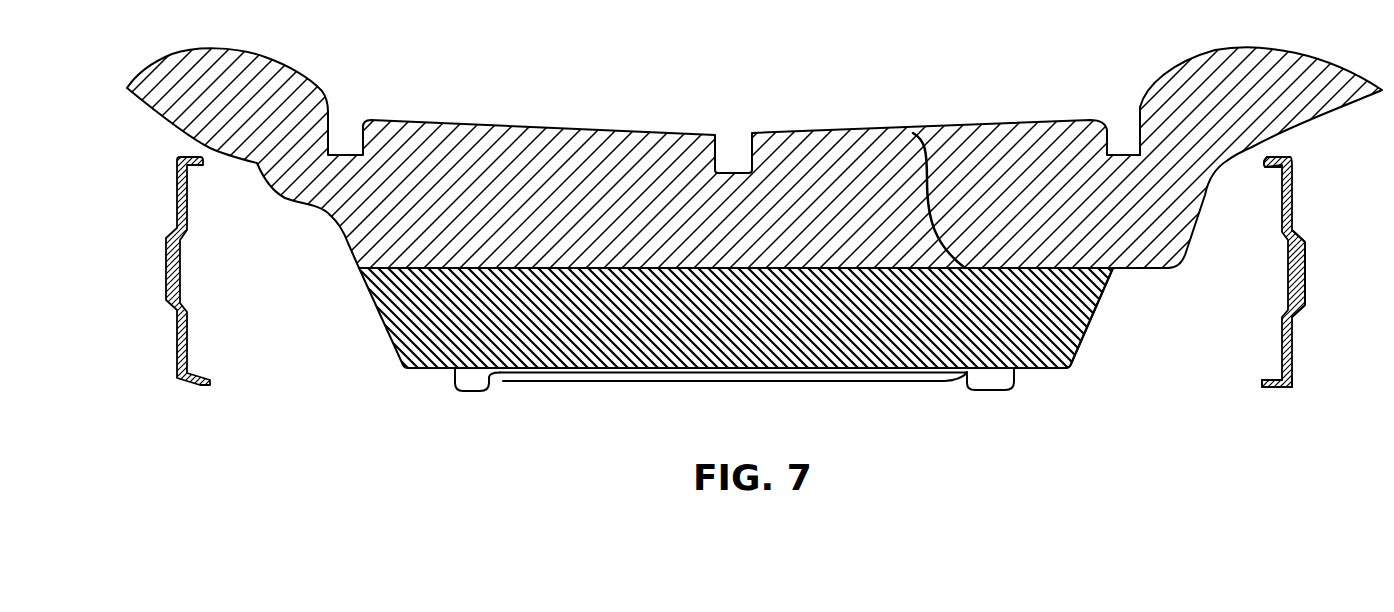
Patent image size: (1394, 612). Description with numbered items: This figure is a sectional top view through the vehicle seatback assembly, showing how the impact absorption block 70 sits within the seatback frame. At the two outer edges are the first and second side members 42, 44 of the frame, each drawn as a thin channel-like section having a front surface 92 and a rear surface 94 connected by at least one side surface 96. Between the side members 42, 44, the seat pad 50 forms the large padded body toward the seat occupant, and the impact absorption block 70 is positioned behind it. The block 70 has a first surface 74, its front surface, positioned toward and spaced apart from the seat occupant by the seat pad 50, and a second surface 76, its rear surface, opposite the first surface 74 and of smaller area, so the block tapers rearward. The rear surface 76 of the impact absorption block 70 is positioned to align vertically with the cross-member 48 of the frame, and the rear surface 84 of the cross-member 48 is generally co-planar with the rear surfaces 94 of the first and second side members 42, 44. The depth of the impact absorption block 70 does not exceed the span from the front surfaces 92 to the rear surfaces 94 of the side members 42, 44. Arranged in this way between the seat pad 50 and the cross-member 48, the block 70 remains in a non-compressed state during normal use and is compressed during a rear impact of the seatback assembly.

The side member 42 is at (1288, 257).
The side member 44 is at (178, 270).
The cross-member 48 is at (580, 382).
The seat pad 50 is at (1170, 78).
The impact absorption block 70 is at (383, 322).
The first surface 74 is at (913, 133).
The second surface 76 is at (1050, 372).
The rear surface 84 is at (893, 381).
The front surface 92 is at (1273, 152).
The rear surface 94 is at (1283, 384).
The side surface 96 is at (1305, 277).